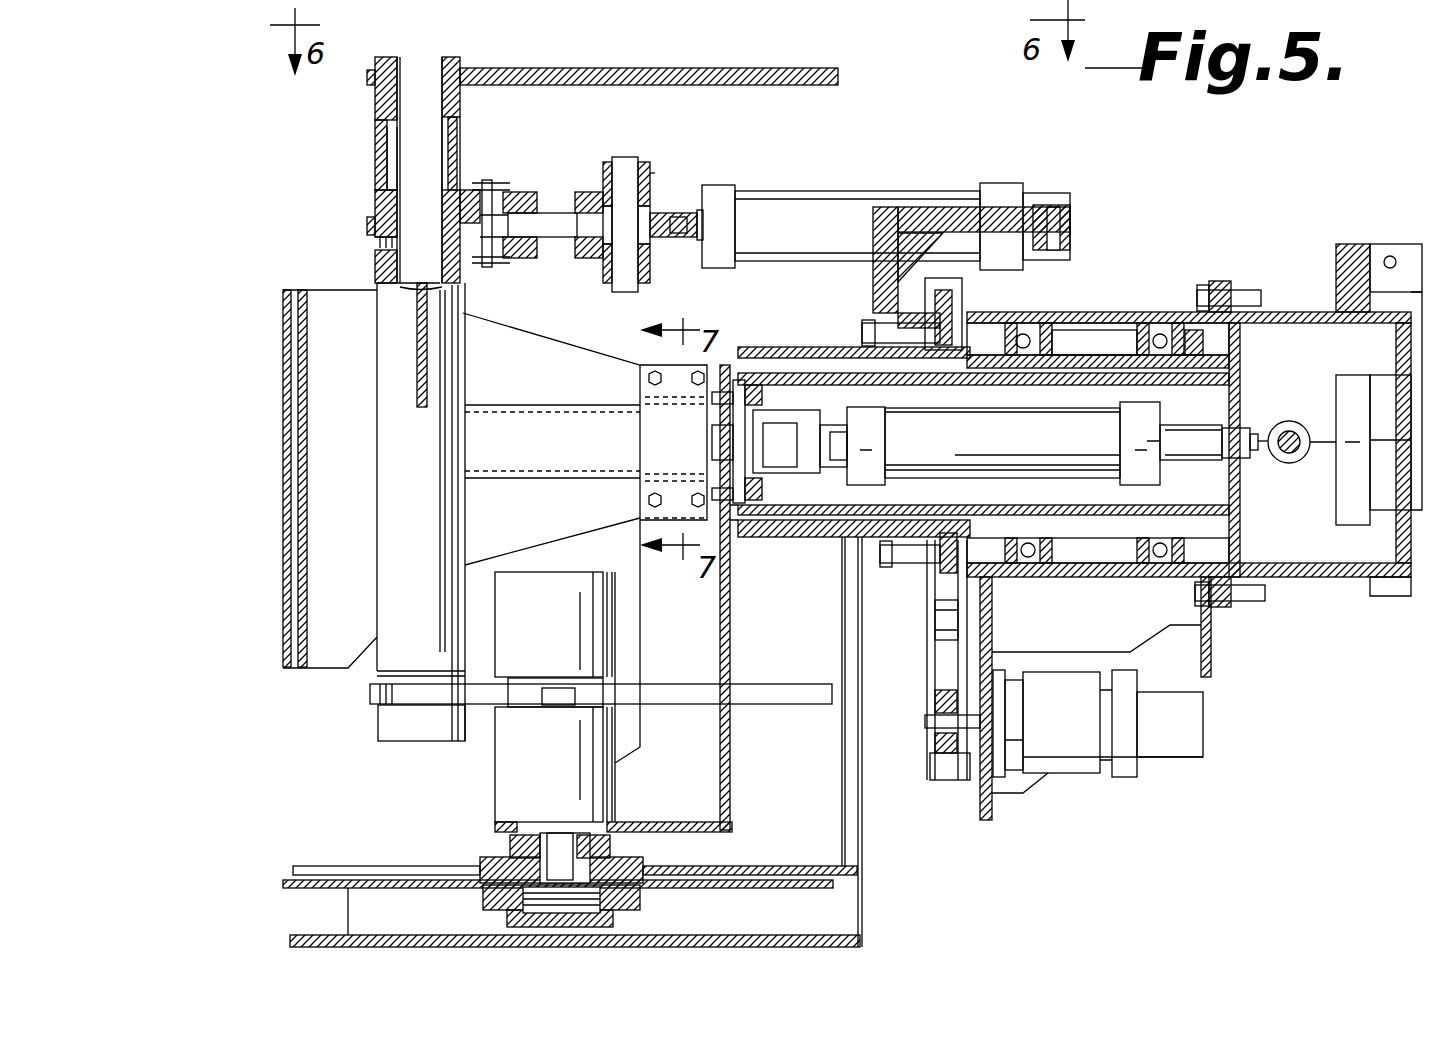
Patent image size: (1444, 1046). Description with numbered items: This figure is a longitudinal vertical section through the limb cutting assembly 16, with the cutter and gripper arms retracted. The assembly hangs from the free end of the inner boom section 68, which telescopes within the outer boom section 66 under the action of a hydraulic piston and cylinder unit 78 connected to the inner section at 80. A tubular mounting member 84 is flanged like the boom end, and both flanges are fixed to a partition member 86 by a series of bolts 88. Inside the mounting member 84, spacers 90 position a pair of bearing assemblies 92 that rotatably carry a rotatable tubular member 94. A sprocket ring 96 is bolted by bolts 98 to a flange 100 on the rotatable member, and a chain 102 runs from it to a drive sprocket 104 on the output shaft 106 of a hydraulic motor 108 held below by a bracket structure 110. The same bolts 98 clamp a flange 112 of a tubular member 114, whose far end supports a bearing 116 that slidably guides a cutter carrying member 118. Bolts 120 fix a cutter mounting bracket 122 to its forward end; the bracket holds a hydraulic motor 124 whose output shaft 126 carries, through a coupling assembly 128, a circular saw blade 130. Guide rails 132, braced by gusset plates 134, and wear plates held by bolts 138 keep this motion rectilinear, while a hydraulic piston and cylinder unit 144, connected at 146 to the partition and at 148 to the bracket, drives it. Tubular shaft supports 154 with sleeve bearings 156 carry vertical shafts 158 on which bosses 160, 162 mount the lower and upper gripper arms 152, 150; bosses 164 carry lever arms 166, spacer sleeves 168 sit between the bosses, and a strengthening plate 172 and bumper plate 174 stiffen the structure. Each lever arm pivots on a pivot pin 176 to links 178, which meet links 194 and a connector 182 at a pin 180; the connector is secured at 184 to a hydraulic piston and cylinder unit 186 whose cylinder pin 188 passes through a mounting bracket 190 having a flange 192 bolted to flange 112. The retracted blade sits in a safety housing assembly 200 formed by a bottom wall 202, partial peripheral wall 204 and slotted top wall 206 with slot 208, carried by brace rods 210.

The limb cutting assembly 16 is at (1110, 292).
The outer boom section 66 is at (1385, 598).
The inner boom section 68 is at (1282, 310).
The hydraulic piston and cylinder unit 78 is at (1372, 512).
The connection 80 is at (1297, 470).
The tubular mounting member 84 is at (1027, 580).
The partition member 86 is at (1242, 358).
The bolts 88 is at (1262, 603).
The spacers 90 is at (1150, 578).
The bearing assemblies 92 is at (1140, 552).
The rotatable tubular member 94 is at (1068, 358).
The sprocket ring 96 is at (952, 312).
The bolts 98 is at (880, 557).
The flange 100 is at (913, 582).
The chain 102 is at (930, 668).
The drive sprocket 104 is at (927, 743).
The output shaft 106 is at (930, 722).
The hydraulic motor 108 is at (1075, 778).
The bracket structure 110 is at (1211, 650).
The flange 112 is at (877, 562).
The tubular member 114 is at (757, 537).
The bearing 116 is at (837, 350).
The cutter carrying member 118 is at (830, 520).
The bolts 120 is at (765, 405).
The cutter mounting bracket 122 is at (735, 775).
The hydraulic motor 124 is at (515, 800).
The output shaft 126 is at (617, 810).
The coupling assembly 128 is at (640, 862).
The circular saw blade 130 is at (283, 880).
The guide rails 132 is at (510, 455).
The gusset plates 134 is at (520, 345).
The bolts 138 is at (648, 497).
The hydraulic piston and cylinder unit 144 is at (967, 423).
The connection 146 is at (1195, 415).
The connection 148 is at (785, 462).
The upper gripper arms 150 is at (757, 86).
The lower gripper arms 152 is at (760, 705).
The tubular shaft supports 154 is at (393, 462).
The sleeve bearings 156 is at (377, 270).
The vertical shafts 158 is at (415, 192).
The set screwed bosses 160 is at (395, 723).
The set screwed bosses 162 is at (462, 102).
The set screwed bosses 164 is at (372, 216).
The lever arms 166 is at (520, 210).
The spacer sleeve 168 is at (374, 150).
The strengthening plate 172 is at (420, 348).
The bumper plate 174 is at (283, 438).
The pivot pin 176 is at (487, 270).
The links 178 is at (603, 250).
The pin 180 is at (628, 300).
The connector 182 is at (665, 205).
The securing point 184 is at (676, 238).
The hydraulic piston and cylinder unit 186 is at (840, 197).
The pin 188 is at (1062, 205).
The mounting bracket 190 is at (1075, 225).
The flange 192 is at (875, 258).
The links 194 is at (655, 172).
The safety housing assembly 200 is at (865, 905).
The bottom wall 202 is at (820, 936).
The partial peripheral wall 204 is at (863, 877).
The top wall 206 is at (800, 867).
The slot 208 is at (372, 866).
The brace rods 210 is at (848, 790).